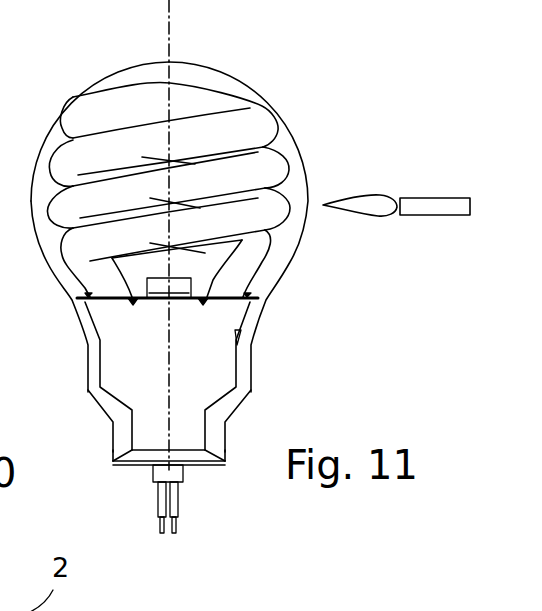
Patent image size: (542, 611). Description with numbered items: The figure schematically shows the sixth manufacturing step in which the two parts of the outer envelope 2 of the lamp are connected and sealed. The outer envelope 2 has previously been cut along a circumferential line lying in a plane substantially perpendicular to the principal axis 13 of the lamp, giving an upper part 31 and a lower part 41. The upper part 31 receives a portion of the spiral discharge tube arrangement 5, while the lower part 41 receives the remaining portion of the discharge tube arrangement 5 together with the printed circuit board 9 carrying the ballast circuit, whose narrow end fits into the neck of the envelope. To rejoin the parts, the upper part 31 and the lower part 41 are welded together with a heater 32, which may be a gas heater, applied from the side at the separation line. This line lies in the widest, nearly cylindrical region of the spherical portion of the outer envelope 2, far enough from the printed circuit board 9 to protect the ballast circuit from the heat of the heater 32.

The outer envelope 2 is at (207, 83).
The discharge tube arrangement 5 is at (257, 125).
The printed circuit board 9 is at (207, 356).
The principal axis 13 is at (167, 42).
The upper part 31 is at (77, 98).
The heater 32 is at (405, 182).
The lower part 41 is at (86, 357).